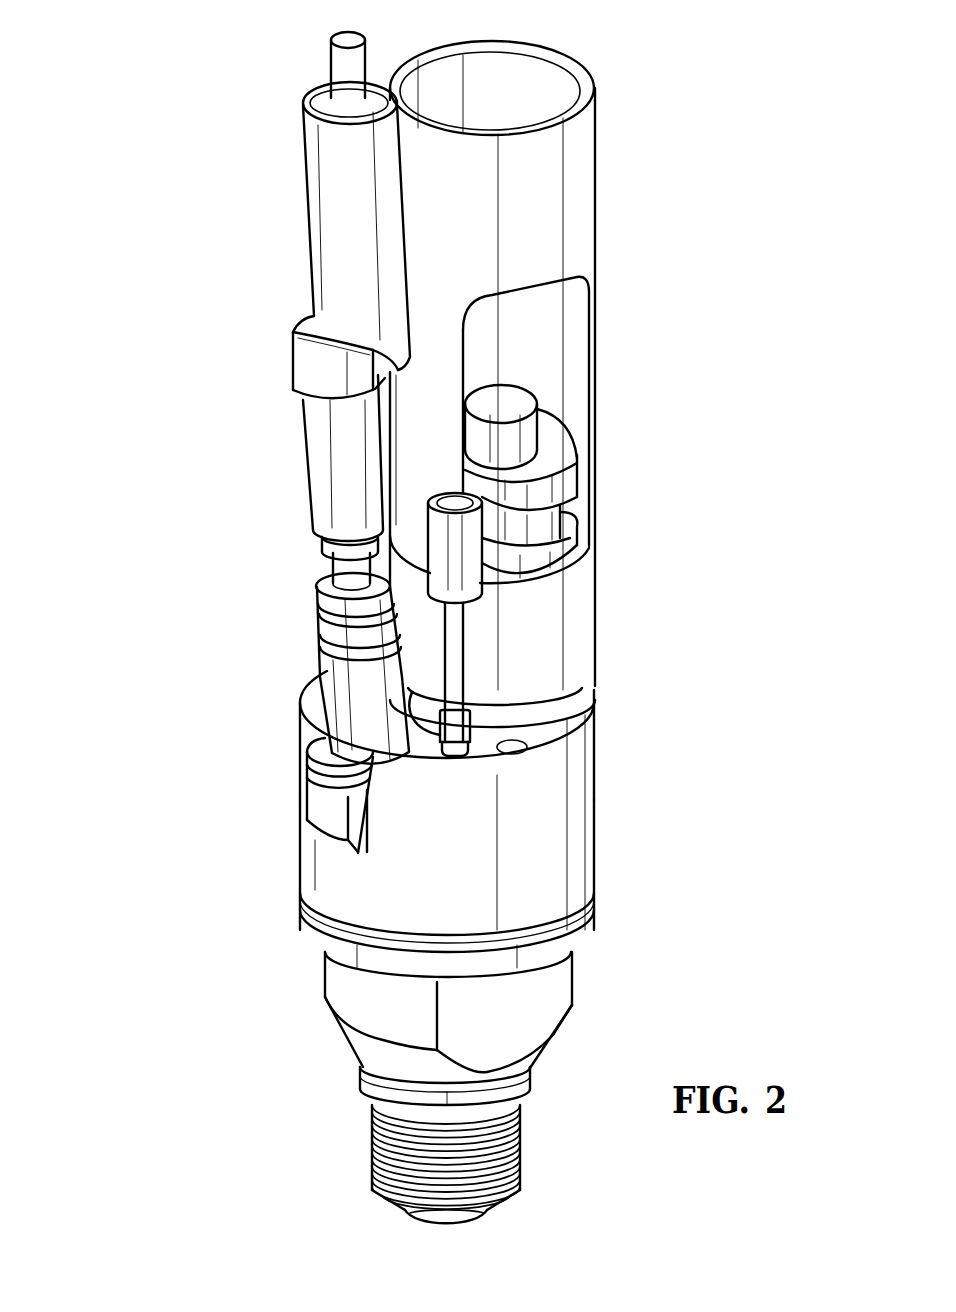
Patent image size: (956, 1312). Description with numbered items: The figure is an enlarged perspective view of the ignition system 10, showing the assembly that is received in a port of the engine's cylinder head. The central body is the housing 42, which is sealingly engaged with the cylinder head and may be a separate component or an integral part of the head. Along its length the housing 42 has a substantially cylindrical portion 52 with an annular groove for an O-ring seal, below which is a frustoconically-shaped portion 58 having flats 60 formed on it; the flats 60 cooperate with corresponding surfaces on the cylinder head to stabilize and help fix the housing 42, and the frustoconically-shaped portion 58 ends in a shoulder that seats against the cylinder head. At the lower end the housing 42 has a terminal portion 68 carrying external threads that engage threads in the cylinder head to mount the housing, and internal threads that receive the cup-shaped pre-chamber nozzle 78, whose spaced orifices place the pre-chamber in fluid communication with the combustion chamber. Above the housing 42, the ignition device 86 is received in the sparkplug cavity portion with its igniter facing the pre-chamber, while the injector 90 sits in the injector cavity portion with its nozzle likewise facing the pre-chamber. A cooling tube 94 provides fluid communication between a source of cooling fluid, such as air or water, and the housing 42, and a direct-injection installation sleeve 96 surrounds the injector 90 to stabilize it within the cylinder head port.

The ignition system 10 is at (124, 221).
The housing 42 is at (606, 755).
The cylindrical portion 52 is at (590, 818).
The frustoconically-shaped portion 58 is at (372, 1043).
The flats 60 is at (543, 983).
The terminal portion 68 is at (350, 1145).
The pre-chamber nozzle 78 is at (453, 1232).
The ignition device 86 is at (300, 497).
The injector 90 is at (556, 477).
The cooling tube 94 is at (470, 617).
The direct-injection installation sleeve 96 is at (582, 193).